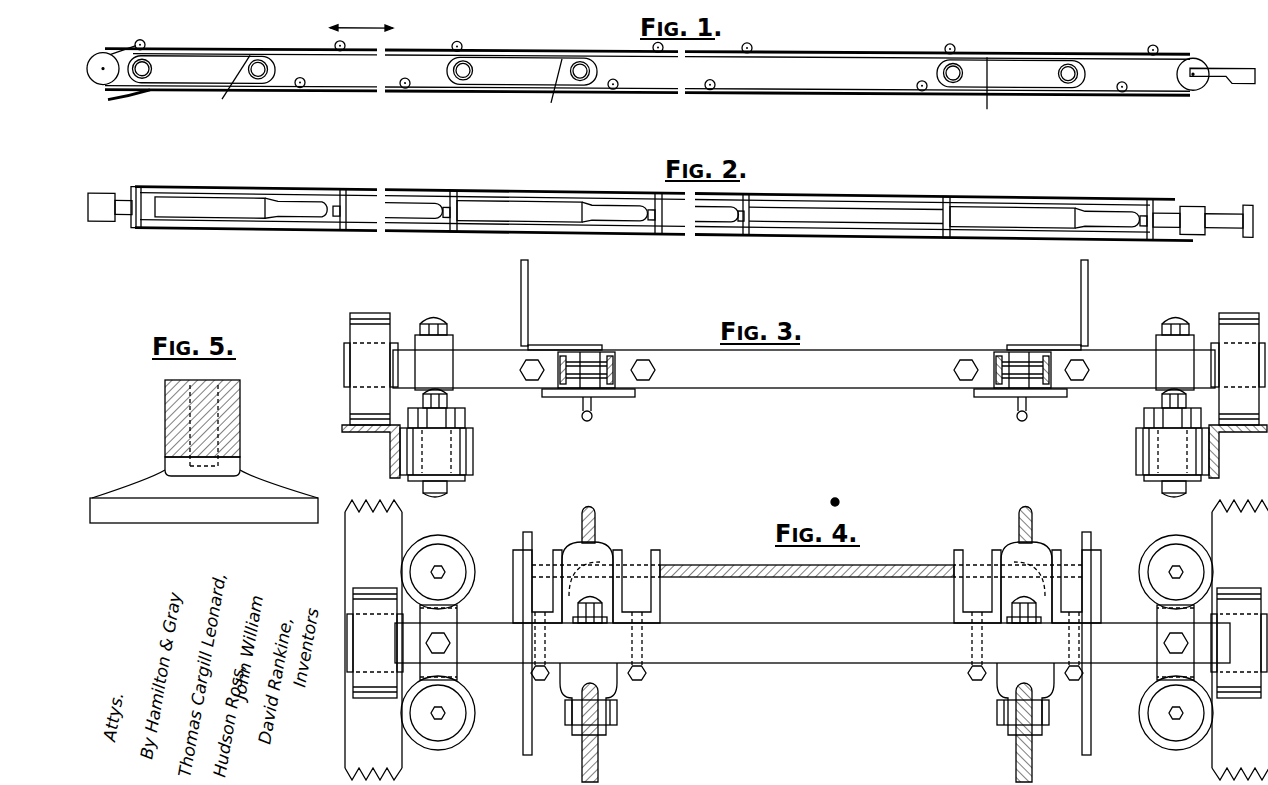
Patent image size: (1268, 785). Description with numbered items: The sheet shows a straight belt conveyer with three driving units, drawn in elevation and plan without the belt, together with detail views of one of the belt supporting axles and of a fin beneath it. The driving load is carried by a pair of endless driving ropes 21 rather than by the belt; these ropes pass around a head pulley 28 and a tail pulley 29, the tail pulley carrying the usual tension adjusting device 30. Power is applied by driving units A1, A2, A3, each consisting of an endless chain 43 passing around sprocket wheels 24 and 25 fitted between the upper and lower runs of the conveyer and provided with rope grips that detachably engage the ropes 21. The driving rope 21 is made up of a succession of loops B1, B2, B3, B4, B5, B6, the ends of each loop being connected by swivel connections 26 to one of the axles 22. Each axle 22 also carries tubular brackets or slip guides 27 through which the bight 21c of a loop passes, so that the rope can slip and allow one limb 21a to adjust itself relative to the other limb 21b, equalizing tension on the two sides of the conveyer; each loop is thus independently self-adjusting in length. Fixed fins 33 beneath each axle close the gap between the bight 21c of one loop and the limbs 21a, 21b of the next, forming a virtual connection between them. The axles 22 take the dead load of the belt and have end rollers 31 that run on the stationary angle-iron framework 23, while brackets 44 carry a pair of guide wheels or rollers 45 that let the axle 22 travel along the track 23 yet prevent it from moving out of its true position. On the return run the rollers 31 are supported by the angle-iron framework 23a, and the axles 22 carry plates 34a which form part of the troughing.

In FIG. 1, the driving ropes 21 is at (396, 52).
In FIG. 2, the driving ropes 21 is at (850, 191).
In FIG. 2, the limb of rope loop 21a is at (350, 222).
In FIG. 4, the limb of rope loop 21a is at (596, 519).
In FIG. 2, the limb of rope loop 21b is at (410, 197).
In FIG. 4, the limb of rope loop 21b is at (1022, 518).
In FIG. 2, the bight of rope loop 21c is at (645, 203).
In FIG. 4, the bight of rope loop 21c is at (760, 570).
In FIG. 1, the axles 22 is at (462, 46).
In FIG. 2, the axles 22 is at (455, 222).
In FIG. 3, the axles 22 is at (804, 369).
In FIG. 4, the axles 22 is at (812, 643).
In FIG. 5, the axles 22 is at (225, 414).
In FIG. 1, the supporting structure 23 is at (862, 52).
In FIG. 2, the supporting structure 23 is at (560, 228).
In FIG. 3, the supporting structure 23 is at (389, 440).
In FIG. 4, the supporting structure 23 is at (806, 640).
In FIG. 1, the angle-iron framework 23a is at (123, 98).
In FIG. 1, the sprocket wheel 24 is at (152, 68).
In FIG. 1, the sprocket wheel 25 is at (262, 63).
In FIG. 4, the swivel connections 26 is at (807, 640).
In FIG. 4, the tubular brackets or slip guides 27 is at (807, 640).
In FIG. 1, the head pulley 28 is at (103, 60).
In FIG. 2, the head pulley 28 is at (105, 221).
In FIG. 1, the tail pulley 29 is at (1197, 62).
In FIG. 2, the tail pulley 29 is at (1195, 221).
In FIG. 1, the tension adjusting device 30 is at (1238, 78).
In FIG. 2, the tension adjusting device 30 is at (1245, 191).
In FIG. 2, the end rollers 31 is at (749, 188).
In FIG. 3, the end rollers 31 is at (362, 341).
In FIG. 4, the end rollers 31 is at (807, 643).
In FIG. 3, the fins 33 is at (593, 418).
In FIG. 5, the fins 33 is at (233, 512).
In FIG. 3, the plates 34a is at (529, 308).
In FIG. 1, the endless chains 43 is at (600, 90).
In FIG. 3, the brackets 44 is at (804, 363).
In FIG. 4, the brackets 44 is at (452, 620).
In FIG. 3, the guide wheels or rollers 45 is at (466, 447).
In FIG. 4, the guide wheels or rollers 45 is at (807, 648).
In FIG. 1, the driving unit A1 is at (201, 70).
In FIG. 2, the driving unit A1 is at (210, 216).
In FIG. 1, the driving unit A2 is at (522, 71).
In FIG. 2, the driving unit A2 is at (510, 195).
In FIG. 1, the driving unit A3 is at (1011, 74).
In FIG. 2, the driving unit A3 is at (992, 216).
In FIG. 1, the rope loop B1 is at (228, 48).
In FIG. 2, the rope loop B1 is at (300, 214).
In FIG. 1, the rope loop B2 is at (424, 50).
In FIG. 2, the rope loop B2 is at (425, 214).
In FIG. 1, the rope loop B3 is at (544, 50).
In FIG. 2, the rope loop B3 is at (625, 214).
In FIG. 2, the rope loop B4 is at (725, 214).
In FIG. 2, the rope loop B5 is at (872, 213).
In FIG. 2, the rope loop B6 is at (1117, 214).